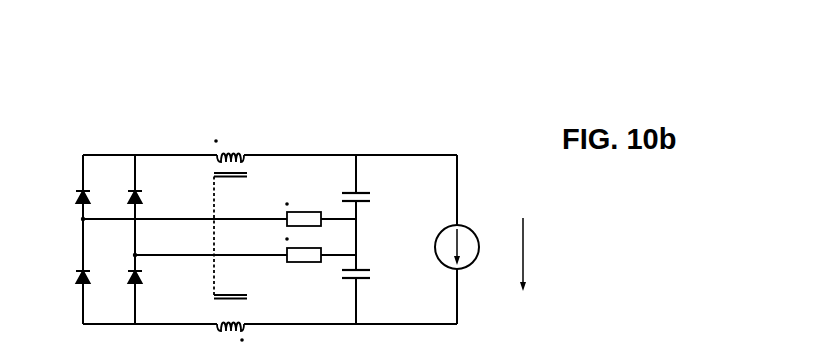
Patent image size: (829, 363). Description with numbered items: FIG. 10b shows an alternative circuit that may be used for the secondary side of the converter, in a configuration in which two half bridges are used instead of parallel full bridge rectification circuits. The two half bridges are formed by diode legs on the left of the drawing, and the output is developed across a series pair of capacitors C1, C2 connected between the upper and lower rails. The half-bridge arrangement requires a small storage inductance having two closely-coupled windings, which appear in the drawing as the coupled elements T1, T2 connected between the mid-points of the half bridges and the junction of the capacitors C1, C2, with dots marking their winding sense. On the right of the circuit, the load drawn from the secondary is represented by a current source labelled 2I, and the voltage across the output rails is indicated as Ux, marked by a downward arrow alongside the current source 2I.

The first transformer winding / resistor T1 is at (303, 202).
The second transformer winding / resistor T2 is at (303, 267).
The first capacitor C1 is at (373, 200).
The second capacitor C2 is at (373, 278).
The current source 2I is at (471, 247).
The output voltage Ux is at (537, 254).